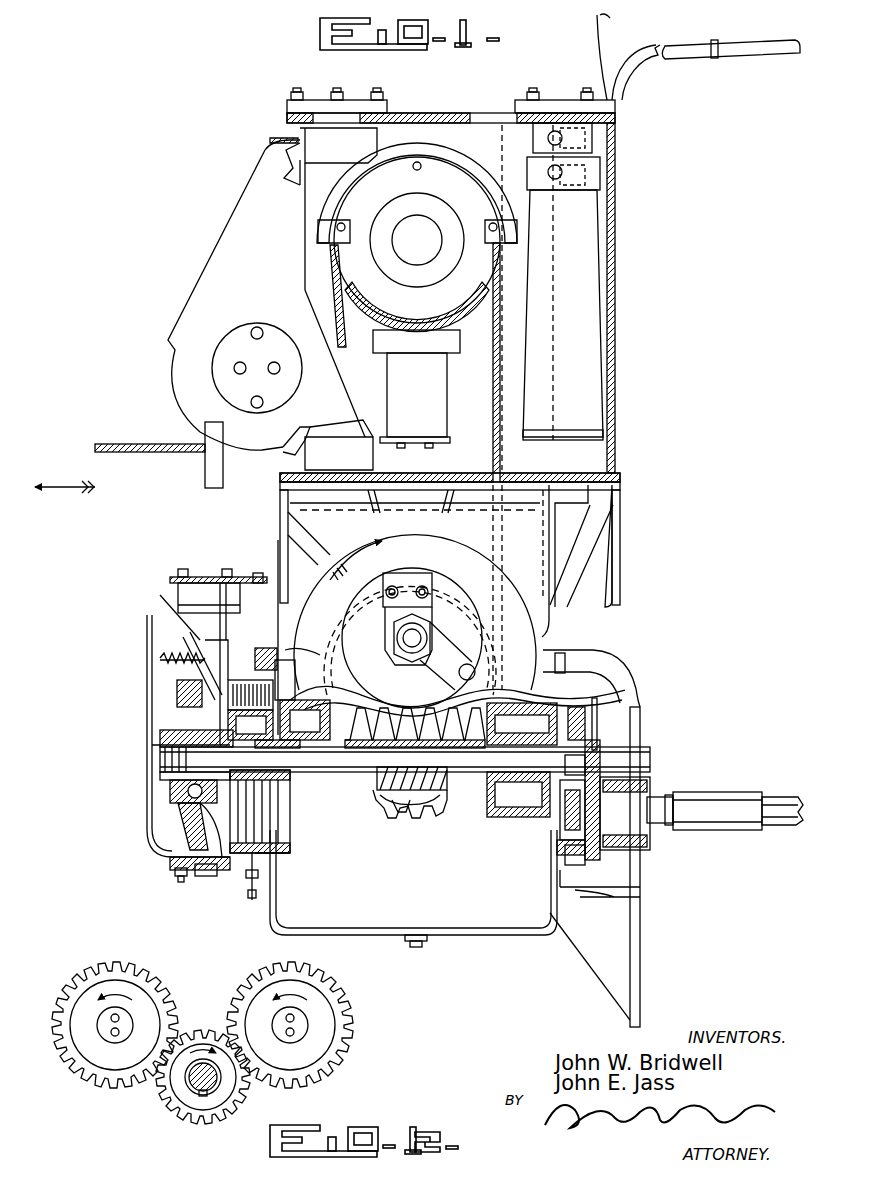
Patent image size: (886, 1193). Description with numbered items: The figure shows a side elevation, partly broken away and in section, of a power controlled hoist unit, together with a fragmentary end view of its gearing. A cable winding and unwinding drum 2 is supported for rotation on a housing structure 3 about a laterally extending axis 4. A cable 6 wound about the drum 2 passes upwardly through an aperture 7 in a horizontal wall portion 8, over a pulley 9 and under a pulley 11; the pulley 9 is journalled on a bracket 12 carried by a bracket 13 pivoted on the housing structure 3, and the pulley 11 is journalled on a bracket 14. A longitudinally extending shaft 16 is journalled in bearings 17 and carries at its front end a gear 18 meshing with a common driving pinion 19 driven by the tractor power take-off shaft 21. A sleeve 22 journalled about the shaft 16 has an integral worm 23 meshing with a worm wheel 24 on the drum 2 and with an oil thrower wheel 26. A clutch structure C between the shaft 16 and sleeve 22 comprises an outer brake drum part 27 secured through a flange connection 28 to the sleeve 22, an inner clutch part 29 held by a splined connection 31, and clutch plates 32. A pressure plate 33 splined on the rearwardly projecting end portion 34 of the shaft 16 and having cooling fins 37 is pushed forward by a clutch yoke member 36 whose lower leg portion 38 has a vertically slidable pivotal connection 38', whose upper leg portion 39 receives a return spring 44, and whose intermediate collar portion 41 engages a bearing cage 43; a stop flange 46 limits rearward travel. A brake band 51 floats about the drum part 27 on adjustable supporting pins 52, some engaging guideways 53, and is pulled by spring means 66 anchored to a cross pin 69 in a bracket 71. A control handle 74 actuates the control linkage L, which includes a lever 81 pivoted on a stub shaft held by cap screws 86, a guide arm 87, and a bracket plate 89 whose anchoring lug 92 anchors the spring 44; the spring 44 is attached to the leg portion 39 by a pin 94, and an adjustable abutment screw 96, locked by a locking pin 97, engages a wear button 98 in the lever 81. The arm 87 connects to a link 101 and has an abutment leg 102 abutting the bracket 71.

In FIG. 1, the cable winding and unwinding drum 2 is at (505, 532).
In FIG. 1, the housing structure 3 is at (612, 546).
In FIG. 1, the laterally extending axis 4 is at (419, 641).
In FIG. 1, the cable 6 is at (114, 445).
In FIG. 1, the aperture 7 is at (481, 477).
In FIG. 1, the horizontal wall portion 8 is at (600, 477).
In FIG. 1, the pulley 9 is at (567, 233).
In FIG. 1, the pulley 11 is at (320, 312).
In FIG. 1, the bracket 12 is at (436, 340).
In FIG. 1, the bracket 13 is at (578, 327).
In FIG. 1, the bracket 14 is at (210, 274).
In FIG. 1, the shaft 16 is at (463, 757).
In FIG. 12, the shaft 16 is at (125, 1023).
In FIG. 1, the bearing 17 is at (368, 835).
In FIG. 1, the gear 18 is at (583, 710).
In FIG. 12, the gear 18 is at (86, 979).
In FIG. 1, the driving pinion 19 is at (577, 852).
In FIG. 12, the driving pinion 19 is at (193, 1127).
In FIG. 1, the power take-off shaft 21 is at (776, 800).
In FIG. 12, the power take-off shaft 21 is at (210, 1078).
In FIG. 1, the sleeve 22 is at (380, 813).
In FIG. 1, the worm 23 is at (410, 803).
In FIG. 1, the worm wheel 24 is at (392, 711).
In FIG. 1, the oil thrower wheel 26 is at (446, 813).
In FIG. 1, the outer brake drum part 27 is at (310, 653).
In FIG. 1, the flange connection 28 is at (311, 697).
In FIG. 1, the inner clutch part 29 is at (291, 687).
In FIG. 1, the splined connection 31 is at (268, 846).
In FIG. 1, the clutch plates 32 is at (242, 717).
In FIG. 1, the pressure plate 33 is at (170, 855).
In FIG. 1, the rearwardly projecting end portion 34 is at (175, 763).
In FIG. 1, the clutch yoke member 36 is at (187, 830).
In FIG. 1, the cooling fins 37 is at (177, 858).
In FIG. 1, the lower leg portion 38 is at (211, 886).
In FIG. 1, the vertically slidable pivotal connection 38' is at (163, 887).
In FIG. 1, the upper leg portion 39 is at (173, 682).
In FIG. 1, the intermediate collar portion 41 is at (188, 827).
In FIG. 1, the bearing cage 43 is at (170, 745).
In FIG. 1, the return spring 44 is at (160, 660).
In FIG. 1, the stop flange 46 is at (160, 762).
In FIG. 1, the brake band 51 is at (273, 853).
In FIG. 1, the adjustable supporting pins 52 is at (252, 897).
In FIG. 1, the guideways 53 is at (268, 855).
In FIG. 1, the spring means 66 is at (262, 650).
In FIG. 1, the cross pin 69 is at (265, 665).
In FIG. 1, the bracket 71 is at (272, 660).
In FIG. 1, the control handle 74 is at (626, 27).
In FIG. 1, the lever 81 is at (185, 632).
In FIG. 1, the cap screws 86 is at (216, 577).
In FIG. 1, the guide arm 87 is at (183, 637).
In FIG. 1, the bracket plate 89 is at (243, 697).
In FIG. 1, the anchoring lug 92 is at (168, 657).
In FIG. 1, the pin 94 is at (190, 677).
In FIG. 1, the adjustable abutment screw 96 is at (226, 590).
In FIG. 1, the locking pin 97 is at (218, 620).
In FIG. 1, the wear button 98 is at (172, 612).
In FIG. 1, the link 101 is at (273, 600).
In FIG. 1, the abutment leg 102 is at (268, 640).
In FIG. 1, the clutch structure C is at (245, 713).
In FIG. 1, the control linkage L is at (278, 540).